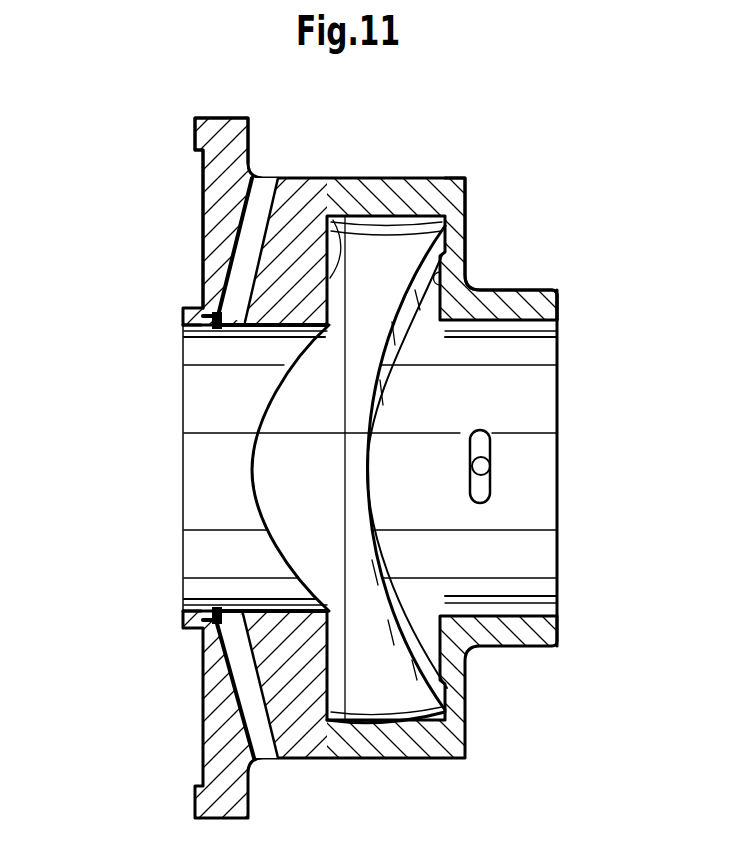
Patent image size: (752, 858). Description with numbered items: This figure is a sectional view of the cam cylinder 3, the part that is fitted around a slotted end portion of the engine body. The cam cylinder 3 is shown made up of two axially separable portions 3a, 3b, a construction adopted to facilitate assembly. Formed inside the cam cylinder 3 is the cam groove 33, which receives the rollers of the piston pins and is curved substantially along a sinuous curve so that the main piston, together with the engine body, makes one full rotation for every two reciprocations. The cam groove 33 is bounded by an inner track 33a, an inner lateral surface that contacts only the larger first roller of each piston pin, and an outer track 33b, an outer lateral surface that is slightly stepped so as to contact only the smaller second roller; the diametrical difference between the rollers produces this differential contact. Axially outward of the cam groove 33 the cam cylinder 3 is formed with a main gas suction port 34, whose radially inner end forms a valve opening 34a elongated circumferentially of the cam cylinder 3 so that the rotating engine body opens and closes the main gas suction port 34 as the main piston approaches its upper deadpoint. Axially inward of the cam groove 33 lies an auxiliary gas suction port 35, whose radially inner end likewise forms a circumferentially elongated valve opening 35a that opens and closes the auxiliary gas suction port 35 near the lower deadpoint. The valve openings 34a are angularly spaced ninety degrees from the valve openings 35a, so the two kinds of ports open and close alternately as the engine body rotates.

The cam cylinder 3 is at (370, 176).
The axially separable portion 3a is at (227, 193).
The axially separable portion 3b is at (427, 193).
The cam groove 33 is at (297, 500).
The inner track 33a is at (338, 222).
The outer track 33b is at (443, 278).
The main gas suction port 34 is at (488, 464).
The valve opening 34a is at (487, 447).
The auxiliary gas suction port 35 is at (263, 190).
The valve opening 35a is at (213, 332).